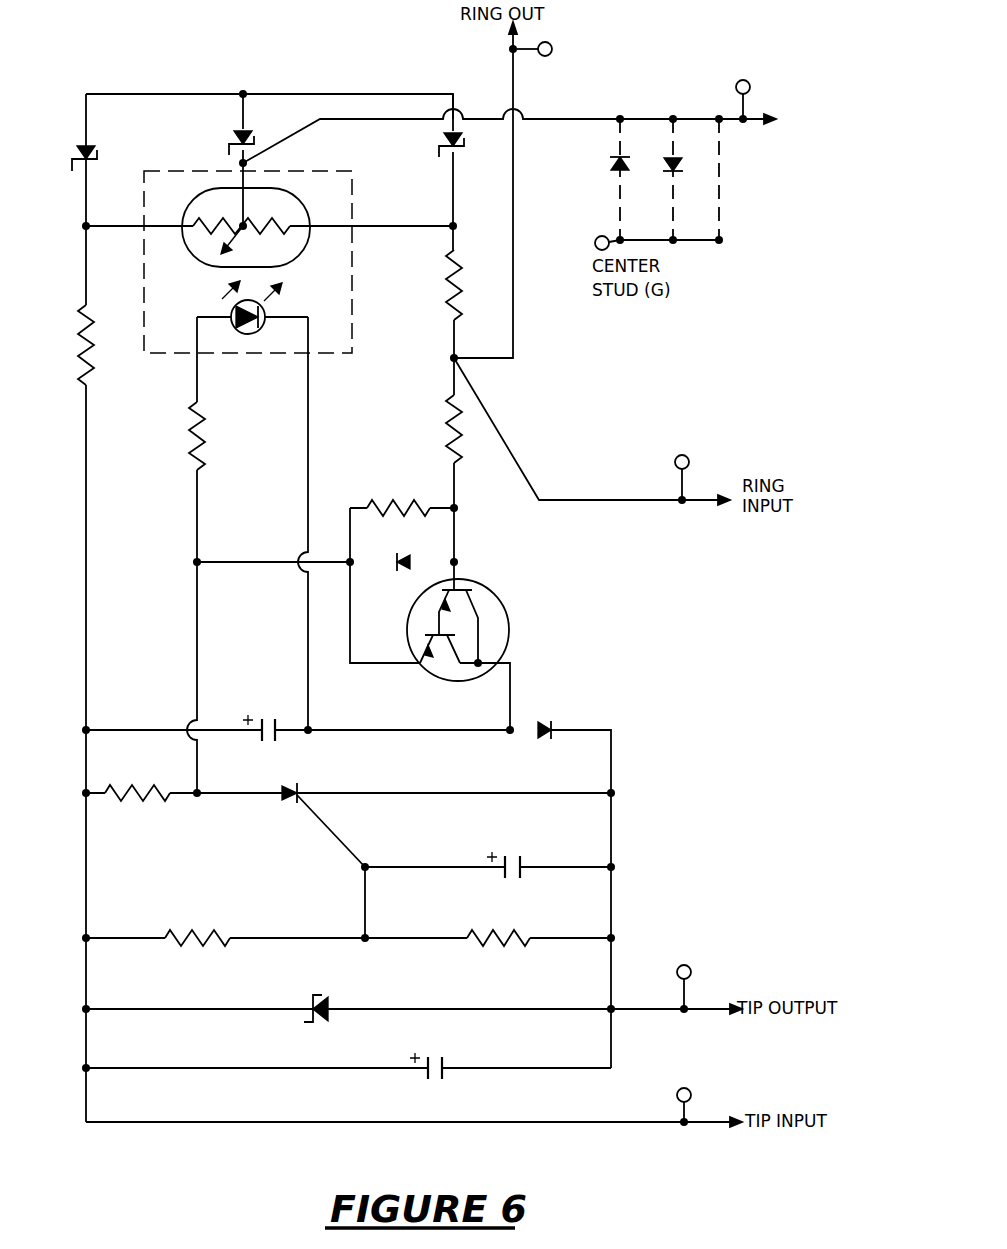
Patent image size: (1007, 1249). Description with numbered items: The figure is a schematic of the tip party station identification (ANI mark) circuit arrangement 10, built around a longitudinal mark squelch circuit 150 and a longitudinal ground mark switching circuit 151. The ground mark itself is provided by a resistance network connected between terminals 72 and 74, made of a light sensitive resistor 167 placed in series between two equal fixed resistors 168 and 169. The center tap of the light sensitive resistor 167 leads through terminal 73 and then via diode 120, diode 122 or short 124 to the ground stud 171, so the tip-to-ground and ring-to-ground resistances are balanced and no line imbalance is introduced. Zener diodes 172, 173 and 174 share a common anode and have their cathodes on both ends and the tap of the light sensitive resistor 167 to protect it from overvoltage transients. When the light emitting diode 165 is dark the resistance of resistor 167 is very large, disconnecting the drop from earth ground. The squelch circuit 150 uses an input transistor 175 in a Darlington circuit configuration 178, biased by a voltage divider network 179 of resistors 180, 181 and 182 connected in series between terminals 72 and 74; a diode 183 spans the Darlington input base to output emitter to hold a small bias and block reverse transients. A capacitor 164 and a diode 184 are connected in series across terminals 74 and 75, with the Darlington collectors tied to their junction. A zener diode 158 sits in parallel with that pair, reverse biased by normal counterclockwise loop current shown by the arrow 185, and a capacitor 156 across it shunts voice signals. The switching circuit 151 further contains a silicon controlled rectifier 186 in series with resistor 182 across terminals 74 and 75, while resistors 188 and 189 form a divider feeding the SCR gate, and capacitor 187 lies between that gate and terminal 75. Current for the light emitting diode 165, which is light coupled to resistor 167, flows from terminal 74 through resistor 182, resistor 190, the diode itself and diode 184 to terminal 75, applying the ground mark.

The line protection circuit 10 is at (668, 733).
The terminal 72 is at (552, 46).
The terminal 73 is at (760, 62).
The terminal 74 is at (706, 1086).
The terminal 75 is at (691, 970).
The diode 120 is at (614, 165).
The diode 122 is at (668, 170).
The short 124 is at (757, 180).
The longitudinal mark squelch circuit 150 is at (478, 579).
The longitudinal ground mark switching circuit 151 is at (628, 815).
The capacitor 156 is at (450, 1044).
The zener diode 158 is at (328, 1000).
The capacitor 164 is at (280, 700).
The light emitting diode 165 is at (252, 334).
The light sensitive resistor 167 is at (288, 222).
The resistor 168 is at (90, 352).
The resistor 169 is at (451, 282).
The ground stud 171 is at (600, 236).
The zener diode 172 is at (84, 143).
The zener diode 173 is at (240, 137).
The zener diode 174 is at (443, 140).
The input transistor 175 is at (472, 608).
The Darlington circuit configuration 178 is at (508, 648).
The voltage divider network 179 is at (370, 504).
The resistor 180 is at (460, 434).
The resistor 181 is at (390, 503).
The resistor 182 is at (144, 788).
The diode 183 is at (402, 556).
The diode 184 is at (558, 718).
The arrow 185 is at (660, 994).
The silicon controlled rectifier 186 is at (292, 778).
The capacitor 187 is at (524, 858).
The resistor 188 is at (224, 933).
The resistor 189 is at (540, 915).
The resistor 190 is at (243, 202).